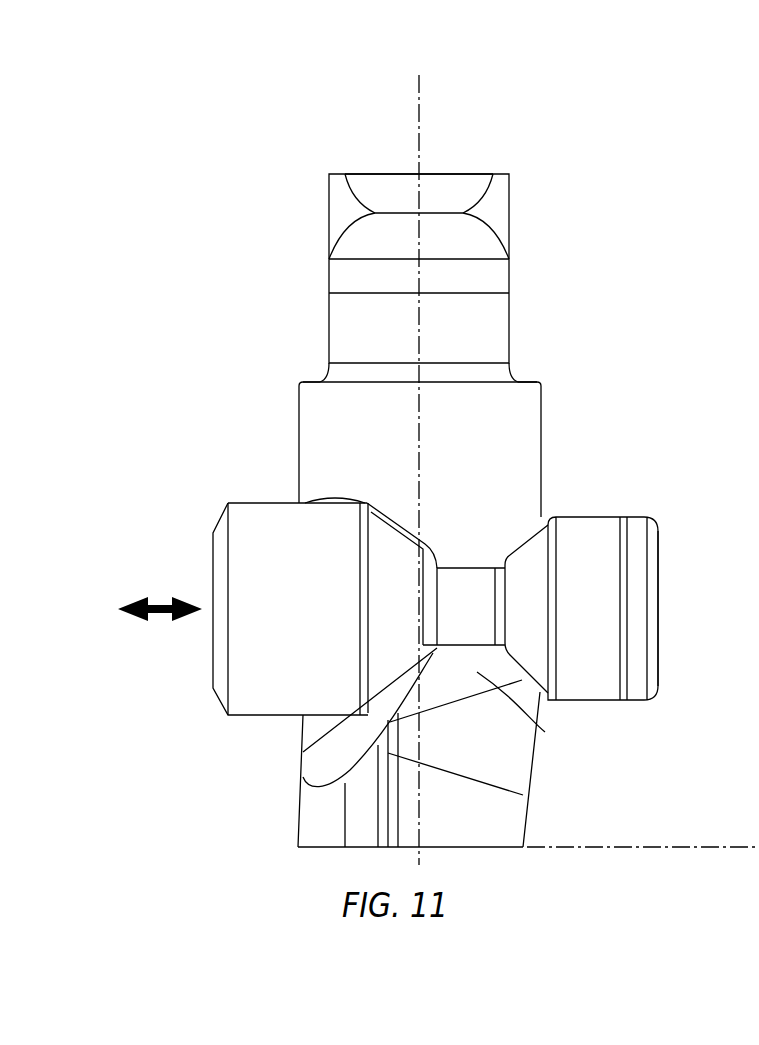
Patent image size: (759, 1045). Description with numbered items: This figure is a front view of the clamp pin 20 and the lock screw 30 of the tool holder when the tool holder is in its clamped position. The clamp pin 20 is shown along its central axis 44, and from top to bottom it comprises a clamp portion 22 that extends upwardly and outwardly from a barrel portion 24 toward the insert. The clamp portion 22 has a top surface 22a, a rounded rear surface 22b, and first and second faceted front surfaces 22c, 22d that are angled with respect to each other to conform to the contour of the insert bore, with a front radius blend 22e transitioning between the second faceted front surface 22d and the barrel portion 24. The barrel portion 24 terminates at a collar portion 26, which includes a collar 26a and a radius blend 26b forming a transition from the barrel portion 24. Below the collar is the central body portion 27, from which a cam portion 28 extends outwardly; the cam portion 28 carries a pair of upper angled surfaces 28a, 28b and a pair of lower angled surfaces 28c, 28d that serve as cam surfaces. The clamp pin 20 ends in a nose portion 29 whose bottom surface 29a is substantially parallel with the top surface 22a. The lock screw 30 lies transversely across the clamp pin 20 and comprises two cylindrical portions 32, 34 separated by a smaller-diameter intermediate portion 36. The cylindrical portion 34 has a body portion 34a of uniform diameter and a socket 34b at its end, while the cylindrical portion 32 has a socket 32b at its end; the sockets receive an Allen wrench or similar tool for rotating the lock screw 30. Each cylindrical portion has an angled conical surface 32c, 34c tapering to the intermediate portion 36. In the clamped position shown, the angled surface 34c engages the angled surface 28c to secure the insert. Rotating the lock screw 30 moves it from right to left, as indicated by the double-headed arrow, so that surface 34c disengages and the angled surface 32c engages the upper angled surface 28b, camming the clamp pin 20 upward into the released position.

The clamp pin 20 is at (245, 166).
The clamp portion 22 is at (532, 224).
The top surface 22a is at (433, 170).
The rounded rear surface 22b is at (492, 205).
The first faceted front surface 22c is at (386, 183).
The second faceted front surface 22d is at (362, 240).
The front radius blend 22e is at (343, 281).
The barrel portion 24 is at (532, 306).
The collar portion 26 is at (529, 366).
The collar 26a is at (322, 378).
The radius blend 26b is at (325, 376).
The body portion 27 is at (559, 448).
The cam portion 28 is at (287, 727).
The upper angled surface 28a is at (302, 502).
The upper angled surface 28b is at (545, 732).
The lower angled surface 28c is at (318, 767).
The lower angled surface 28d is at (503, 768).
The nose portion 29 is at (285, 834).
The bottom surface 29a is at (497, 848).
The lock screw 30 is at (673, 506).
The cylindrical portion 32 is at (585, 508).
The socket 32b is at (660, 586).
The angled conical surface 32c is at (535, 527).
The cylindrical portion 34 is at (277, 495).
The body portion 34a is at (247, 503).
The socket 34b is at (213, 563).
The angled conical surface 34c is at (384, 517).
The intermediate portion 36 is at (460, 551).
The central axis 44 is at (423, 92).